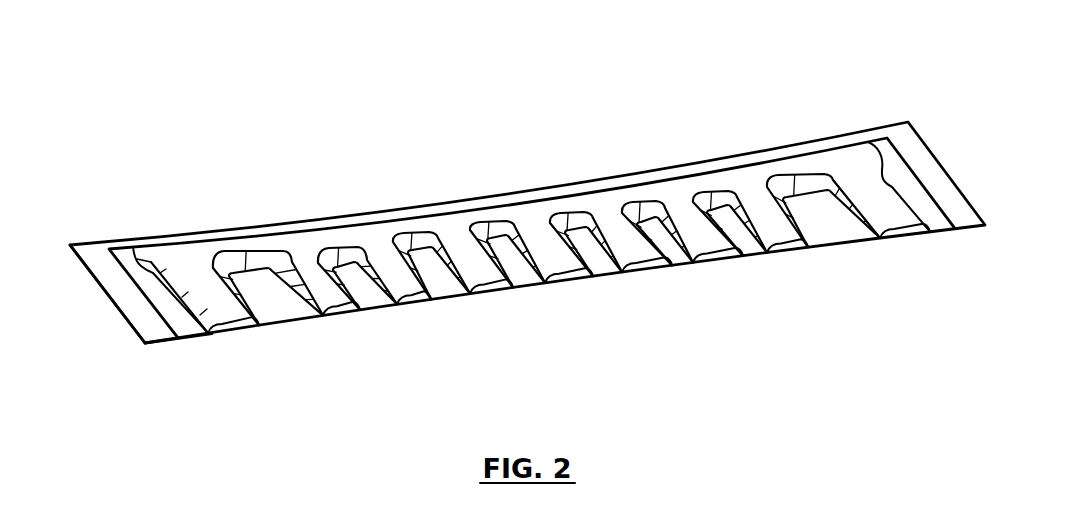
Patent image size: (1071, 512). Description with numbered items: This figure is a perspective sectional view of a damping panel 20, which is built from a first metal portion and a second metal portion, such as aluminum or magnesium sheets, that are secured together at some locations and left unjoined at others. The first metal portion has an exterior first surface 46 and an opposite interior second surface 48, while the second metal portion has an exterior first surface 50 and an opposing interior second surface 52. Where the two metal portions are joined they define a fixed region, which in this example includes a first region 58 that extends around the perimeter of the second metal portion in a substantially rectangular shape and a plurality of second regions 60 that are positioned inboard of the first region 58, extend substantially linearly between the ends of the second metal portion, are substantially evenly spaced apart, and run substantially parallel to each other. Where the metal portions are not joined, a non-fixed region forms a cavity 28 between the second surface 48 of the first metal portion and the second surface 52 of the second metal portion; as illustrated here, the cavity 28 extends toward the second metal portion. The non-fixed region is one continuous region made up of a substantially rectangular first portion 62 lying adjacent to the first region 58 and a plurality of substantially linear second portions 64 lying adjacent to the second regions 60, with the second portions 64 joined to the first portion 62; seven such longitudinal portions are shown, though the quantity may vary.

The damping panel 20 is at (859, 106).
The cavity 28 is at (233, 327).
The first surface 46 is at (127, 325).
The second surface 48 is at (152, 325).
The first surface 50 is at (128, 278).
The second surface 52 is at (412, 292).
The first region 58 is at (927, 207).
The second regions 60 is at (843, 223).
The first portion 62 is at (188, 260).
The second portions 64 is at (465, 258).